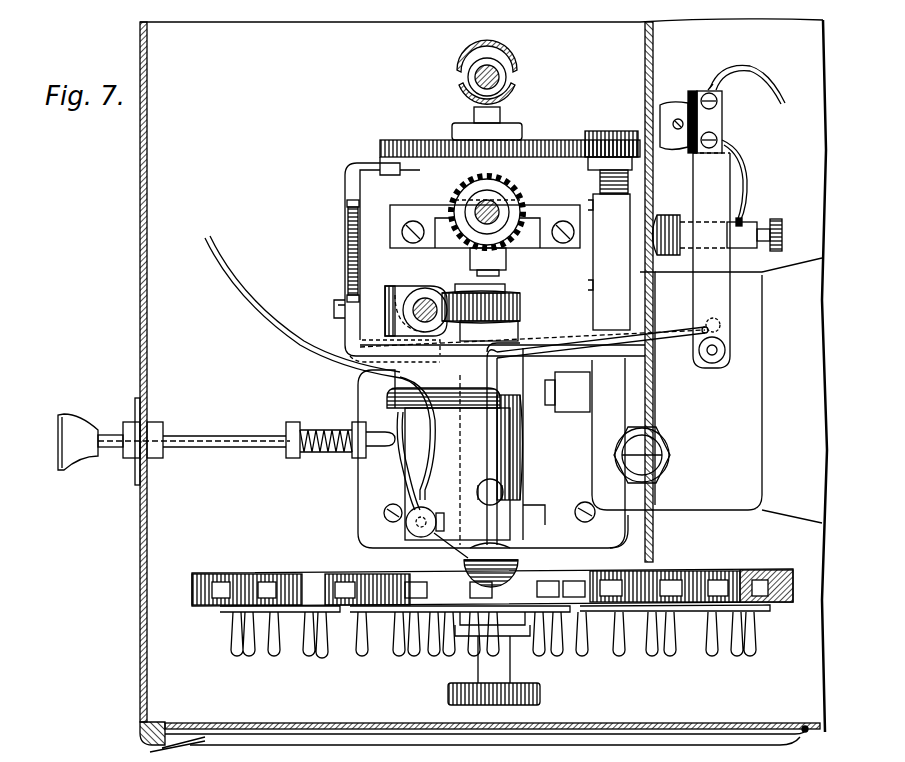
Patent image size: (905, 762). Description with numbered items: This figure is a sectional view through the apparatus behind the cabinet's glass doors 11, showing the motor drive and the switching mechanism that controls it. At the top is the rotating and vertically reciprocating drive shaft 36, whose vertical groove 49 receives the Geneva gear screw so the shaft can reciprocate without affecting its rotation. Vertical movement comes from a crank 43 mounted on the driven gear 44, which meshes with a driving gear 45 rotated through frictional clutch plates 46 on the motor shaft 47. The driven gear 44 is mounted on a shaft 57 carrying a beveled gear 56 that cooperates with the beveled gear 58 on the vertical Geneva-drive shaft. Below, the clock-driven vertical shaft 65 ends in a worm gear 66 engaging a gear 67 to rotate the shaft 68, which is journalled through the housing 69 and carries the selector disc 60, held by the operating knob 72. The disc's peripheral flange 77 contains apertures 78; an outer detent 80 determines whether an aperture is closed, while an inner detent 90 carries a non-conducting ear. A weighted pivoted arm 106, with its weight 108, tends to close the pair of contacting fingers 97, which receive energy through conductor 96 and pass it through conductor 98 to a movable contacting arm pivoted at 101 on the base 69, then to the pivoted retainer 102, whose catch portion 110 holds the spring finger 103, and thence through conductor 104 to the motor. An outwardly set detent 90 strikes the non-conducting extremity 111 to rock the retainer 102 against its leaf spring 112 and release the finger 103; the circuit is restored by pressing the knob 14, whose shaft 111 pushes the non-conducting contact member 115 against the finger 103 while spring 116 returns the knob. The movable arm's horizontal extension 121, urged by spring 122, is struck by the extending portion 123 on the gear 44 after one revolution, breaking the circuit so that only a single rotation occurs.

The glass doors 11 is at (290, 743).
The manual switch-controlling knob 14 is at (84, 430).
The drive shaft 36 is at (495, 60).
The crank 43 is at (710, 502).
The driven gear 44 is at (562, 134).
The driving gear 45 is at (628, 131).
The frictional clutch plates 46 is at (596, 163).
The motor shaft 47 is at (598, 264).
The vertical groove 49 is at (480, 88).
The beveled gear 56 is at (516, 190).
The shaft 57 is at (485, 278).
The beveled gear 58 is at (456, 204).
The selector disc 60 is at (315, 566).
The vertical shaft 65 is at (420, 300).
The worm gear 66 is at (428, 287).
The gear 67 is at (521, 305).
The shaft 68 is at (495, 285).
The housing 69 is at (447, 420).
The operating knob 72 is at (460, 683).
The peripheral flange 77 is at (622, 575).
The apertures 78 is at (575, 580).
The outer detent 80 is at (248, 655).
The inner detent 90 is at (275, 655).
The conductor 96 is at (760, 79).
The contacting fingers 97 is at (703, 187).
The conductor 98 is at (745, 198).
The pivot 101 is at (334, 309).
The retainer 102 is at (521, 431).
The spring finger 103 is at (400, 465).
The conductor 104 is at (282, 348).
The pivoted arm 106 is at (536, 343).
The weight 108 is at (520, 556).
The catch portion 110 is at (410, 395).
The non-conducting extremity 111 is at (224, 436).
The leaf spring 112 is at (440, 548).
The non-conducting contact member 115 is at (372, 430).
The spring 116 is at (326, 418).
The horizontal extension 121 is at (352, 183).
The spring 122 is at (349, 249).
The extending portion 123 is at (406, 165).